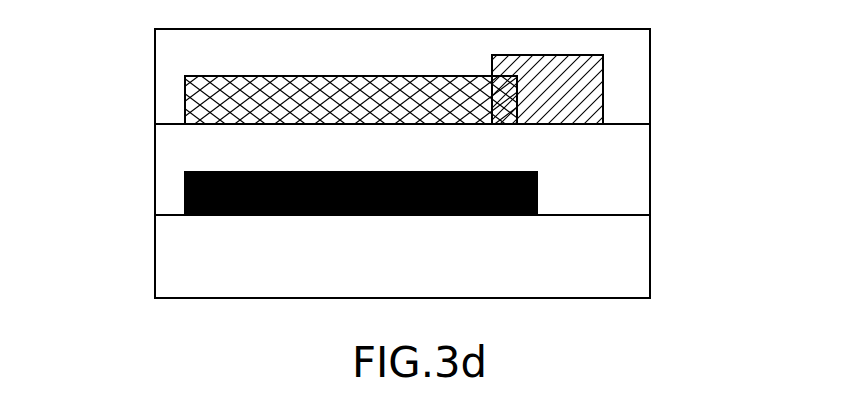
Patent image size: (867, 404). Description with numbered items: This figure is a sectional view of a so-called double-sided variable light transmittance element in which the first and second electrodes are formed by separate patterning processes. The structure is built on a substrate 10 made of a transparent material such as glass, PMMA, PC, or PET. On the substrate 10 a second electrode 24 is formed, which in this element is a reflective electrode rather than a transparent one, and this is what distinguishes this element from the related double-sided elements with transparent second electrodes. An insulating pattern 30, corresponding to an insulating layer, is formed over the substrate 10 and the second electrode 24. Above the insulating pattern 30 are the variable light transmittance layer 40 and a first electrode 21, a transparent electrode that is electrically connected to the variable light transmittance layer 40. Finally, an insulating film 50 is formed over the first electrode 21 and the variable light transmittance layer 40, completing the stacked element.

The substrate 10 is at (620, 257).
The first electrode 21 is at (580, 95).
The second electrode 24 is at (216, 197).
The insulating pattern 30 is at (620, 182).
The variable light transmittance layer 40 is at (217, 103).
The insulating film 50 is at (627, 64).